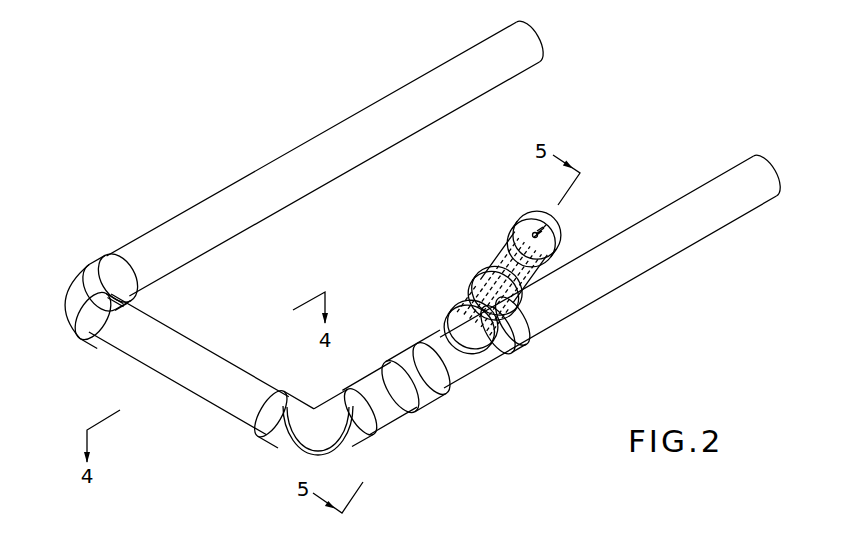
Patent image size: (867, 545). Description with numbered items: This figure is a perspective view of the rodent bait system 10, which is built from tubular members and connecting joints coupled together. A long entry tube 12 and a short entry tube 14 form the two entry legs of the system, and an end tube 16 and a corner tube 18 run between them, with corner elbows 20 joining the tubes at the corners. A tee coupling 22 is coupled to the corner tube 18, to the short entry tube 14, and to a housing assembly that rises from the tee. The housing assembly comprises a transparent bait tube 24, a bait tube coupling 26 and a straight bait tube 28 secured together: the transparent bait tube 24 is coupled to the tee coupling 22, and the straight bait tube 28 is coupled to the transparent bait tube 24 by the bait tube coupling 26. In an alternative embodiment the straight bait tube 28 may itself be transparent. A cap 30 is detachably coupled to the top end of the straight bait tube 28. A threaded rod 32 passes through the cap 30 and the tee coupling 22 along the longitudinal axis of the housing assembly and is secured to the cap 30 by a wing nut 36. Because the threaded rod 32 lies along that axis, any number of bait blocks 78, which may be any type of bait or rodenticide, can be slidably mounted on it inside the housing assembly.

The piping assembly 10 is at (214, 150).
The long entry tube 12 is at (397, 99).
The short entry tube 14 is at (710, 230).
The end tube 16 is at (188, 345).
The corner tube 18 is at (383, 420).
The corner elbows 20 is at (88, 328).
The tee coupling 22 is at (455, 383).
The transparent bait tube 24 is at (452, 310).
The bait tube coupling 26 is at (510, 322).
The straight bait tube 28 is at (490, 268).
The cap 30 is at (559, 236).
The threaded rod 32 is at (543, 225).
The wing nut 36 is at (532, 232).
The bait blocks 78 is at (533, 297).